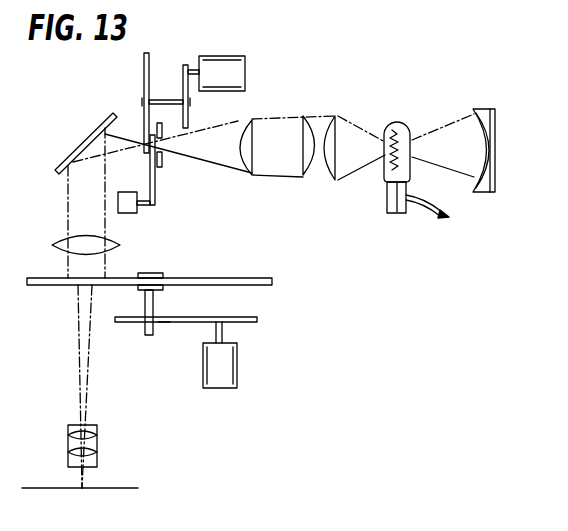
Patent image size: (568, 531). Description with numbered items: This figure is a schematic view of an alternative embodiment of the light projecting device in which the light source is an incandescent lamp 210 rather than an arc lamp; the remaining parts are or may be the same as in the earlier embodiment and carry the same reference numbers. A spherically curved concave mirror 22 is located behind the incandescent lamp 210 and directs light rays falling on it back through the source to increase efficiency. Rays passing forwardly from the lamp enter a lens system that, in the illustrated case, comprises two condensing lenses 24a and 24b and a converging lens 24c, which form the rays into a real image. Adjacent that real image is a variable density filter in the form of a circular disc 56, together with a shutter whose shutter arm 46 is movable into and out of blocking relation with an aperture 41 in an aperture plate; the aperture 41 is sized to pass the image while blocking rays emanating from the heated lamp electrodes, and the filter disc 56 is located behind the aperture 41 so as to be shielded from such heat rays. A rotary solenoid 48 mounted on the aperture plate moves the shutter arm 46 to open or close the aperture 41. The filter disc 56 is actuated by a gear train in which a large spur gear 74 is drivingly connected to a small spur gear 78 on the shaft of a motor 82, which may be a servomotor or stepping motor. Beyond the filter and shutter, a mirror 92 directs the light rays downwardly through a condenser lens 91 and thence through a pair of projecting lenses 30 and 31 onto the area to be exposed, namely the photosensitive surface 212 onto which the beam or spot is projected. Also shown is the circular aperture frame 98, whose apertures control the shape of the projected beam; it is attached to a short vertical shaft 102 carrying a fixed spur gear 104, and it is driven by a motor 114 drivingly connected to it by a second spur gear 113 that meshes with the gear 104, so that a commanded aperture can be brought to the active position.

The variable density filter 56 is at (148, 60).
The small spur gear 78 is at (187, 67).
The large spur gear 74 is at (189, 114).
The motor 82 is at (233, 63).
The mirror 92 is at (101, 133).
The aperture 41 is at (161, 143).
The shutter arm 46 is at (156, 186).
The rotary solenoid 48 is at (130, 213).
The converging lens 24c is at (243, 176).
The condensing lens 24b is at (303, 176).
The condensing lens 24a is at (330, 181).
The incandescent lamp 210 is at (404, 122).
The concave mirror 22 is at (491, 123).
The condenser lens 91 is at (120, 247).
The aperture frame 98 is at (272, 280).
The vertical shaft 102 is at (154, 298).
The second spur gear 113 is at (252, 317).
The spur gear 104 is at (164, 323).
The motor 114 is at (237, 368).
The projecting lens 30 is at (97, 432).
The projecting lens 31 is at (97, 452).
The photosensitive surface 212 is at (119, 487).